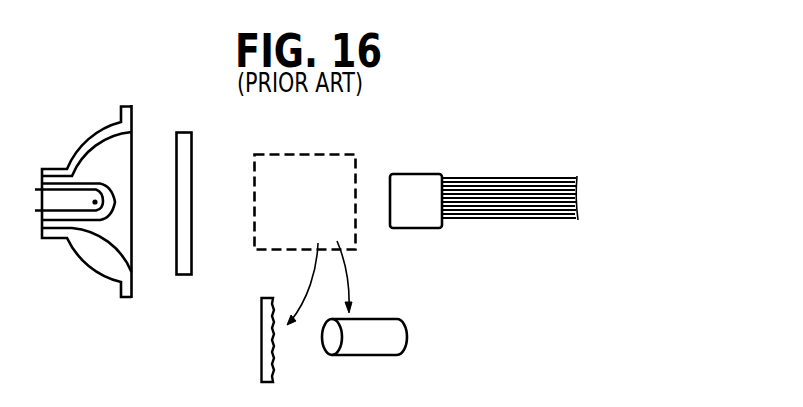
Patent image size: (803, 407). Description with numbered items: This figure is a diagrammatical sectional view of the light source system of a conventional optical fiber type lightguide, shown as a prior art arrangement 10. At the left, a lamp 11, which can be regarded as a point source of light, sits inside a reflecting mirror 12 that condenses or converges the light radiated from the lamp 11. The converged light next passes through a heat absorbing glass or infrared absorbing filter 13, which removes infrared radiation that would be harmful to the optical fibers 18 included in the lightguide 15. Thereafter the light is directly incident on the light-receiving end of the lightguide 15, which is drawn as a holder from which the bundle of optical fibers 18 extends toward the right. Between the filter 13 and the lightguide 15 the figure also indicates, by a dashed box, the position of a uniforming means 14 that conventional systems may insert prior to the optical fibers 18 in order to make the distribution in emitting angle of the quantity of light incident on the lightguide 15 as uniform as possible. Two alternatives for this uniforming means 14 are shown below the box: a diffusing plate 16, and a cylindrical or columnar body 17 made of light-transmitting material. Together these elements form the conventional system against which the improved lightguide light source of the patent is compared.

The reflector 10 is at (72, 139).
The lamp 11 is at (108, 188).
The reflecting mirror 12 is at (108, 122).
The infrared absorbing filter 13 is at (192, 147).
The uniforming means 14 is at (305, 153).
The lightguide 15 is at (427, 173).
The diffusing plate 16 is at (268, 298).
The cylindrical or columnar body 17 is at (392, 318).
The optical fibers 18 is at (535, 219).